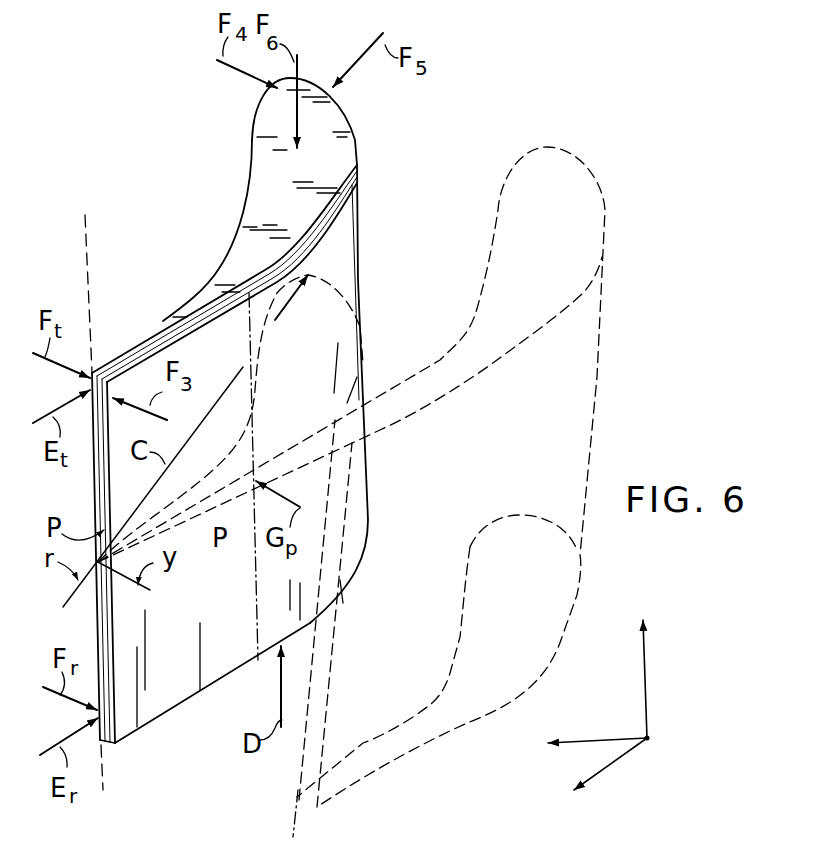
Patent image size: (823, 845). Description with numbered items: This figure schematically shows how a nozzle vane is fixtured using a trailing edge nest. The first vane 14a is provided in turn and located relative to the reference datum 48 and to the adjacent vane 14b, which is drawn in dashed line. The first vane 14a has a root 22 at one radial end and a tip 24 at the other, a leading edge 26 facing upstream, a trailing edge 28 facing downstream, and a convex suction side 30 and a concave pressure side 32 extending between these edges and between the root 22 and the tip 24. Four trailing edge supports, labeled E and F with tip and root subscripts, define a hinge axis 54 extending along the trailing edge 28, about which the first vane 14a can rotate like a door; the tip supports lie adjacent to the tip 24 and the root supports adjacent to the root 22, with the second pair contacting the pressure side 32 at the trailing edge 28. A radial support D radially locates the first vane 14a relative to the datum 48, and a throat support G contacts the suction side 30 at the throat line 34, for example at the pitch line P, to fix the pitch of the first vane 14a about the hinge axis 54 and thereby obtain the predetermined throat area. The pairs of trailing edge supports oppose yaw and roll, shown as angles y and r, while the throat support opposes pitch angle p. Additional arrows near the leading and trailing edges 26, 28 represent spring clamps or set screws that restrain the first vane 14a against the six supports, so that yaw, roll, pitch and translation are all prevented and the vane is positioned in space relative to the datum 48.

The first vane 14a is at (235, 385).
The adjacent vane 14b is at (580, 155).
The root 22 is at (200, 693).
The tip 24 is at (157, 324).
The leading edge 26 is at (302, 80).
The trailing edge 28 is at (97, 484).
The suction side 30 is at (362, 253).
The pressure side 32 is at (233, 240).
The throat line 34 is at (248, 303).
The reference datum 48 is at (650, 743).
The hinge axis 54 is at (88, 248).